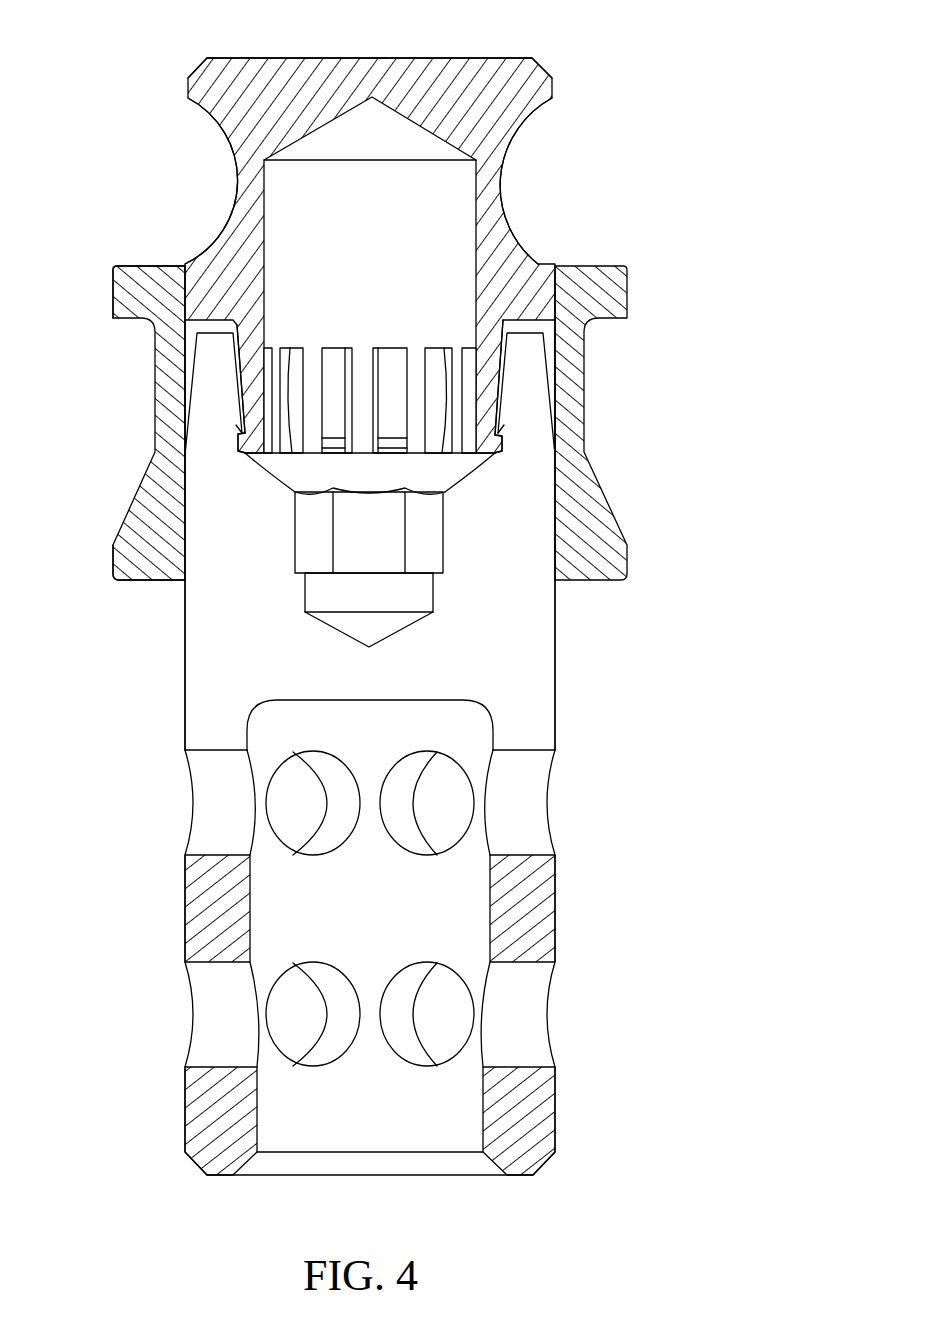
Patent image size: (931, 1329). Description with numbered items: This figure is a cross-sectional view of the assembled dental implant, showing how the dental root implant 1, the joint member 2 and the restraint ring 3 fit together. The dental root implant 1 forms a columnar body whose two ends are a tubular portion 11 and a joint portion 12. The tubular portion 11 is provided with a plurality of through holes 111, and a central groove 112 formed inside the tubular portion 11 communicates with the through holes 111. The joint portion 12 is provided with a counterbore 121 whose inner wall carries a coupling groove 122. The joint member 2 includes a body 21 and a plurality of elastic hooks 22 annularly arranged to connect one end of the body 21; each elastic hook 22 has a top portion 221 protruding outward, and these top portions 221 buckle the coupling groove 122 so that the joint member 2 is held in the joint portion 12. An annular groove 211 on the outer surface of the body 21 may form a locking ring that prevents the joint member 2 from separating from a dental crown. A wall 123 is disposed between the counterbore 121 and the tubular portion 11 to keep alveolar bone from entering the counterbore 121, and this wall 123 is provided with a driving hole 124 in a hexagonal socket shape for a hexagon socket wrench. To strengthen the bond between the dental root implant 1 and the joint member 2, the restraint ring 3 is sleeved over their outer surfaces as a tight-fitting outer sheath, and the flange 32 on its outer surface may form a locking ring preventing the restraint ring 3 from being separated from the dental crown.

The dental root implant 1 is at (667, 1098).
The tubular portion 11 is at (363, 915).
The through holes 111 is at (525, 822).
The central groove 112 is at (483, 1113).
The joint portion 12 is at (416, 469).
The counterbore 121 is at (246, 335).
The coupling groove 122 is at (370, 429).
The wall 123 is at (305, 680).
The driving hole 124 is at (427, 540).
The joint member 2 is at (417, 226).
The body 21 is at (188, 78).
The annular groove 211 is at (531, 110).
The elastic hooks 22 is at (417, 386).
The top portion 221 is at (497, 443).
The restraint ring 3 is at (332, 411).
The flange 32 is at (113, 303).